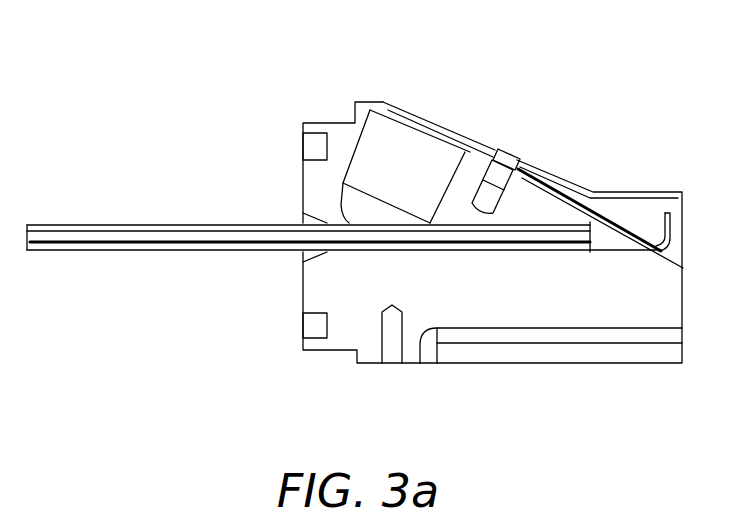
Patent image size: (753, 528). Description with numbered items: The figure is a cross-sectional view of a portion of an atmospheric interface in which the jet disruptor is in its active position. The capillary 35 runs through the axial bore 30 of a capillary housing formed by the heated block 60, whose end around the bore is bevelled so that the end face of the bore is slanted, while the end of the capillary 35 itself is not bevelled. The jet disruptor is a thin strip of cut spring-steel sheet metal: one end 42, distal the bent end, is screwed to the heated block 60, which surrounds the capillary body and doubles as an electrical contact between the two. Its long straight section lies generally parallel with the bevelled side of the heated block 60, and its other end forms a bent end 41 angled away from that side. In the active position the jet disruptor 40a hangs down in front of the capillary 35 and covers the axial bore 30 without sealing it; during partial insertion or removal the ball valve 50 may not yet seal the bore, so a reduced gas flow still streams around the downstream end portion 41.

The axial bore 30 is at (612, 245).
The capillary 35 is at (222, 245).
The jet disruptor in active position 40a is at (623, 223).
The bent end 41 is at (669, 212).
The end of jet disruptor 42 is at (498, 148).
The ball valve 50 is at (381, 203).
The heated block 60 is at (551, 368).